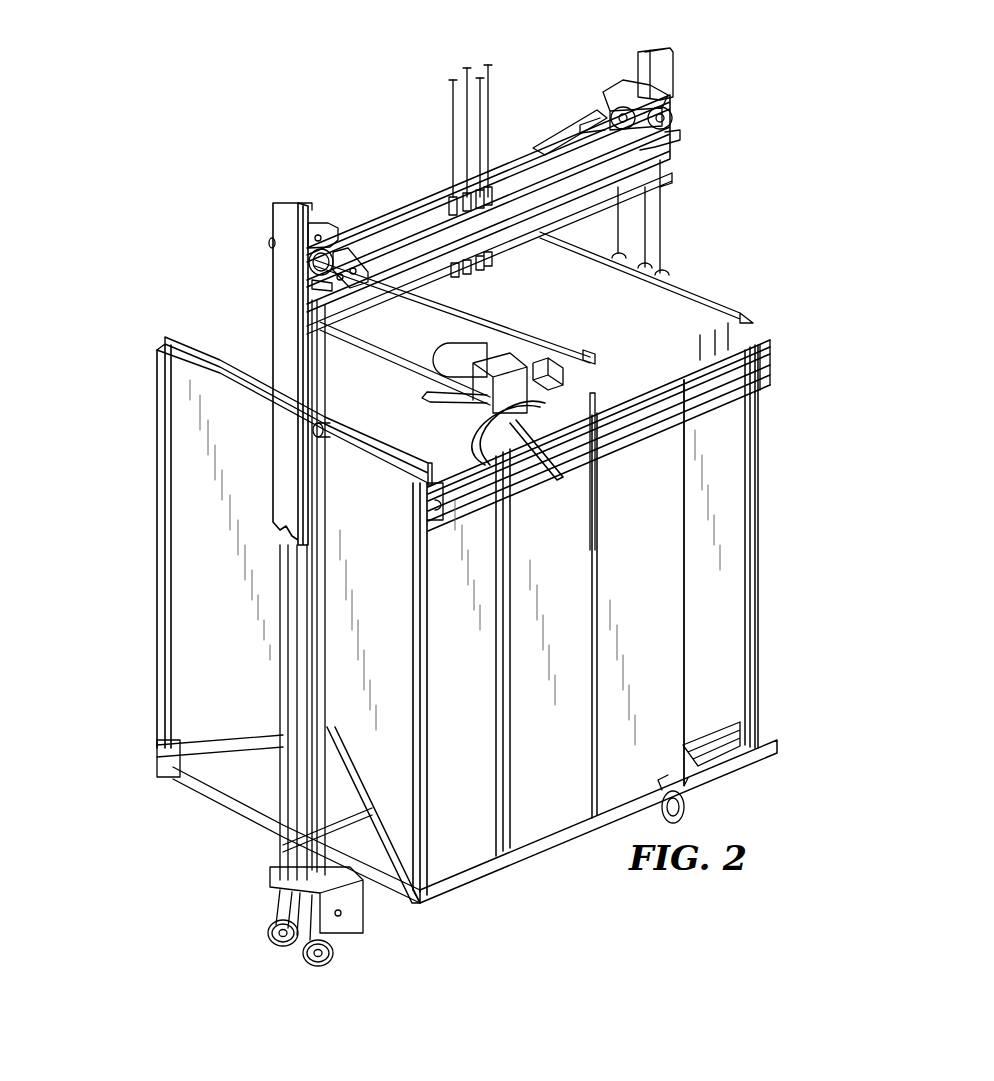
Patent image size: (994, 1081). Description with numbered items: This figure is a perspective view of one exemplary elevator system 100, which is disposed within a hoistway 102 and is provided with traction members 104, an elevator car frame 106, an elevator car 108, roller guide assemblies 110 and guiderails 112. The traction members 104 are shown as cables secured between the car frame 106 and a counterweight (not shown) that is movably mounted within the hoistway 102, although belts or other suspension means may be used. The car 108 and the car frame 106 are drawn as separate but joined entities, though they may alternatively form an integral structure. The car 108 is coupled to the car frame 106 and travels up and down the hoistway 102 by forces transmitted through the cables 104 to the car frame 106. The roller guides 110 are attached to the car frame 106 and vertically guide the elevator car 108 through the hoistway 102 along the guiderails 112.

The elevator system 100 is at (138, 500).
The hoistway 102 is at (577, 66).
The traction members 104 is at (457, 119).
The elevator car frame 106 is at (660, 181).
The elevator car 108 is at (717, 513).
The roller guide assemblies 110 is at (327, 234).
The guiderails 112 is at (283, 279).